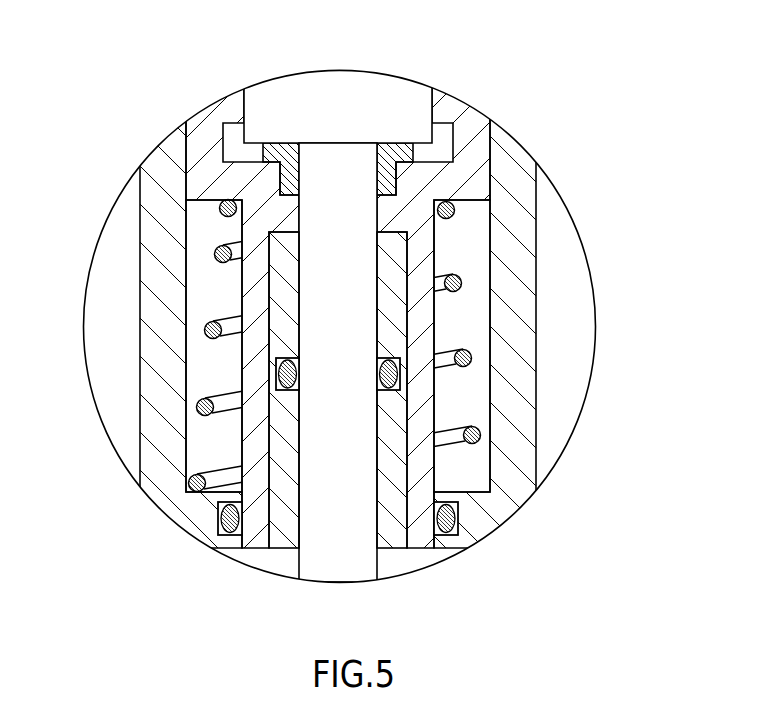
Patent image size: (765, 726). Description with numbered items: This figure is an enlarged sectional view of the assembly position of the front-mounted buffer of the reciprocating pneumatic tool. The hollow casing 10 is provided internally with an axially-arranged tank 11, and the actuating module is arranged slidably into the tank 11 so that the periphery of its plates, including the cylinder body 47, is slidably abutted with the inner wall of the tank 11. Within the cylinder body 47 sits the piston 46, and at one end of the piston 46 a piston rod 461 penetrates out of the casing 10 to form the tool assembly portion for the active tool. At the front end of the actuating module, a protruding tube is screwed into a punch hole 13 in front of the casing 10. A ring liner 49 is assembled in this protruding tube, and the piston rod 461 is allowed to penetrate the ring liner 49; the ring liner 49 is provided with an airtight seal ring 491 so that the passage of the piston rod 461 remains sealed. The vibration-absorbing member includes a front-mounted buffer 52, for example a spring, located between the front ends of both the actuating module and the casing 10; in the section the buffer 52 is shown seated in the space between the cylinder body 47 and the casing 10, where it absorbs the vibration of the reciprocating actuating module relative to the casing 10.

The casing 10 is at (549, 242).
The tank 11 is at (476, 271).
The punch hole 13 is at (228, 536).
The piston 46 is at (367, 98).
The piston rod 461 is at (367, 463).
The cylinder body 47 is at (473, 143).
The ring liner 49 is at (280, 442).
The airtight seal ring 491 is at (277, 370).
The front-mounted buffer 52 is at (462, 353).